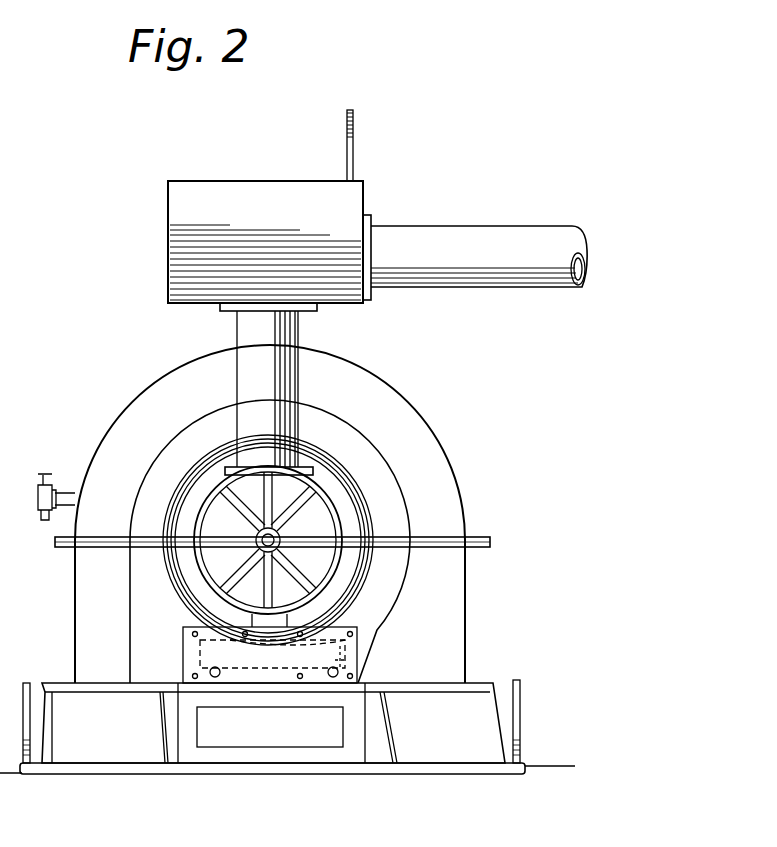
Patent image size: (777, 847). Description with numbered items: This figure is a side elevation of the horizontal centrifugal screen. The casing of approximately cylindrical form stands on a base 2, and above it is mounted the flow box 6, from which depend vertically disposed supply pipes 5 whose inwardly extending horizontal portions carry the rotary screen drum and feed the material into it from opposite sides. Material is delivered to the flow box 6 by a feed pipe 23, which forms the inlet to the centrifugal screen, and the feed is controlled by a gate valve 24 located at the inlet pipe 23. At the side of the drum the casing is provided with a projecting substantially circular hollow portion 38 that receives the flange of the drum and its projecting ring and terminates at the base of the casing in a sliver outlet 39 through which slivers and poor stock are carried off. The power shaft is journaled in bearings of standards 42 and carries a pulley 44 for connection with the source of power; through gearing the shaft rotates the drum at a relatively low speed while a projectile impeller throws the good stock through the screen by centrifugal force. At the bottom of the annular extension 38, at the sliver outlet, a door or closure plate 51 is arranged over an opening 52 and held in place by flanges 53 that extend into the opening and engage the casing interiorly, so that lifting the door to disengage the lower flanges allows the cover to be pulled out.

The base 2 is at (483, 708).
The supply pipe 5 is at (265, 400).
The flow box 6 is at (312, 235).
The feed pipe 23 is at (500, 240).
The gate valve 24 is at (354, 118).
The projecting substantially circular hollow portion 38 is at (348, 438).
The sliver outlet 39 is at (245, 725).
The standard 42 is at (275, 658).
The pulley 44 is at (335, 508).
The door or closure plate 51 is at (343, 652).
The opening 52 is at (347, 643).
The flange 53 is at (336, 676).